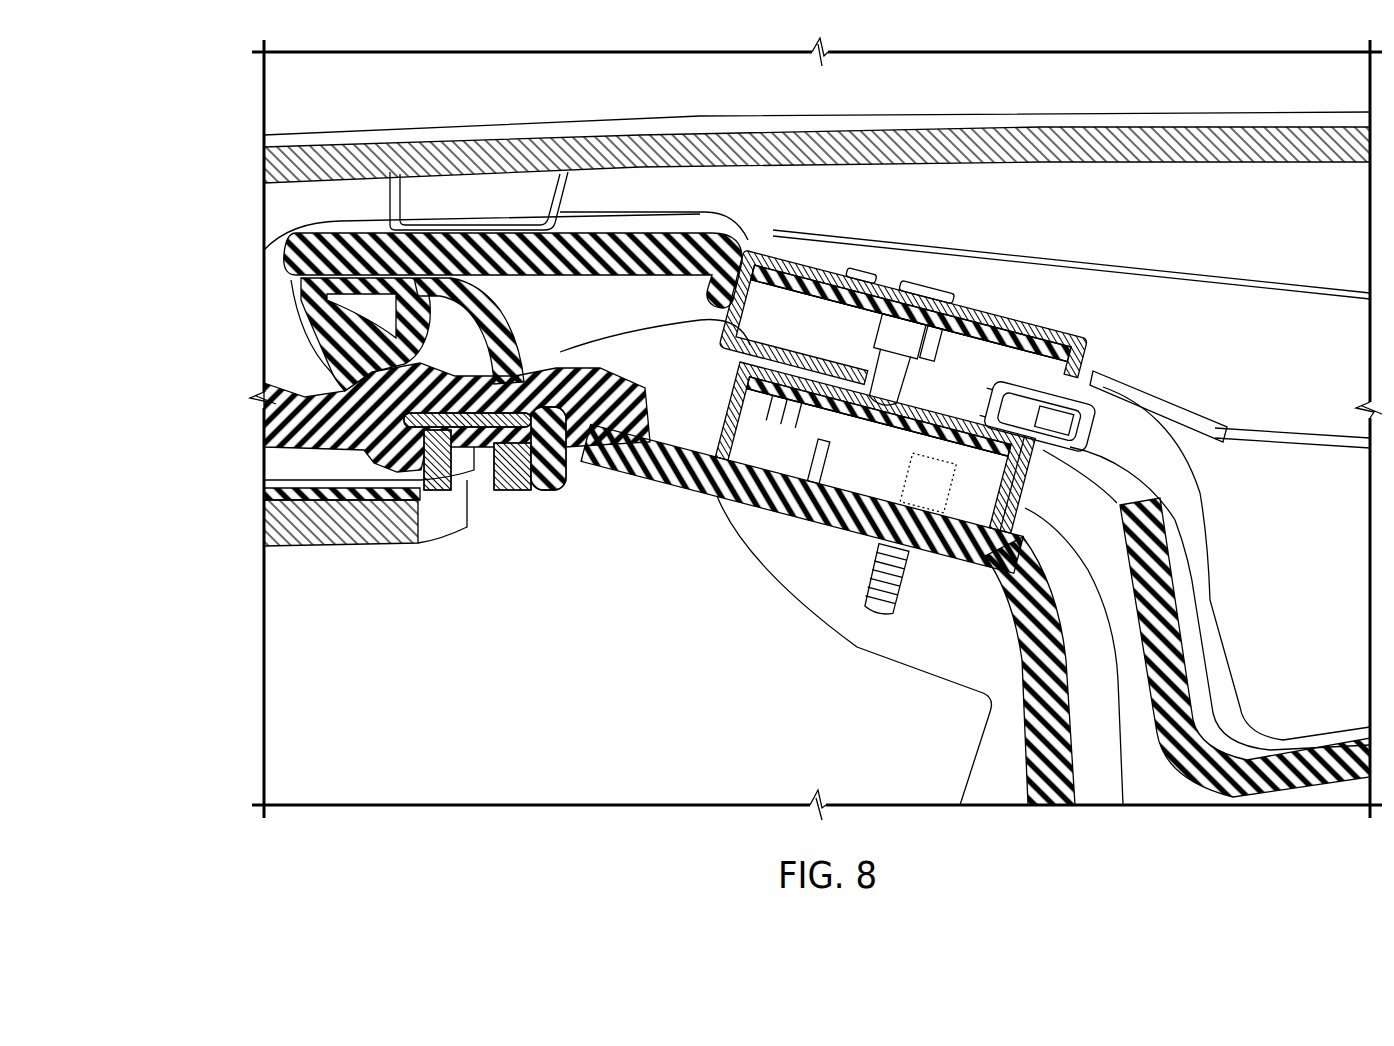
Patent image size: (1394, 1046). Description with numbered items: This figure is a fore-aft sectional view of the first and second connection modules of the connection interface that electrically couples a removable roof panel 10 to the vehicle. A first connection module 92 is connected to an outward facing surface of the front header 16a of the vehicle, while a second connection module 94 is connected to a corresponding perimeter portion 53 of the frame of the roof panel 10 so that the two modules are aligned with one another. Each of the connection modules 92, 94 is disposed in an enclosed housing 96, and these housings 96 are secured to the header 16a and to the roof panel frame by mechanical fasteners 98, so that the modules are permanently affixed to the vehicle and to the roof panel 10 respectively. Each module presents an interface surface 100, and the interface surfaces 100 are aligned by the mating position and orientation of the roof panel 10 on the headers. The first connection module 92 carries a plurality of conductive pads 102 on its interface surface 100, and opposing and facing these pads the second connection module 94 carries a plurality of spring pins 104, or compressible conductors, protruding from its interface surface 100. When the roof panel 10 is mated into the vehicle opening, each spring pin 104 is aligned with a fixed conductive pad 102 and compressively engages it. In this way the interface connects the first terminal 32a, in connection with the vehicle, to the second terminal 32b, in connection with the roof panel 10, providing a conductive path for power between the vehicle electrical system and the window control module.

The roof panel 10 is at (283, 152).
The perimeter portion 53 is at (755, 143).
The front header 16a is at (1173, 640).
The first terminal 32a is at (920, 567).
The second terminal 32b is at (989, 466).
The first connection module 92 is at (805, 487).
The second connection module 94 is at (849, 316).
The enclosed housing 96 is at (966, 494).
The mechanical fastener 98 is at (885, 580).
The interface surface 100 is at (893, 362).
The conductive pad 102 is at (802, 499).
The spring pin 104 is at (931, 343).